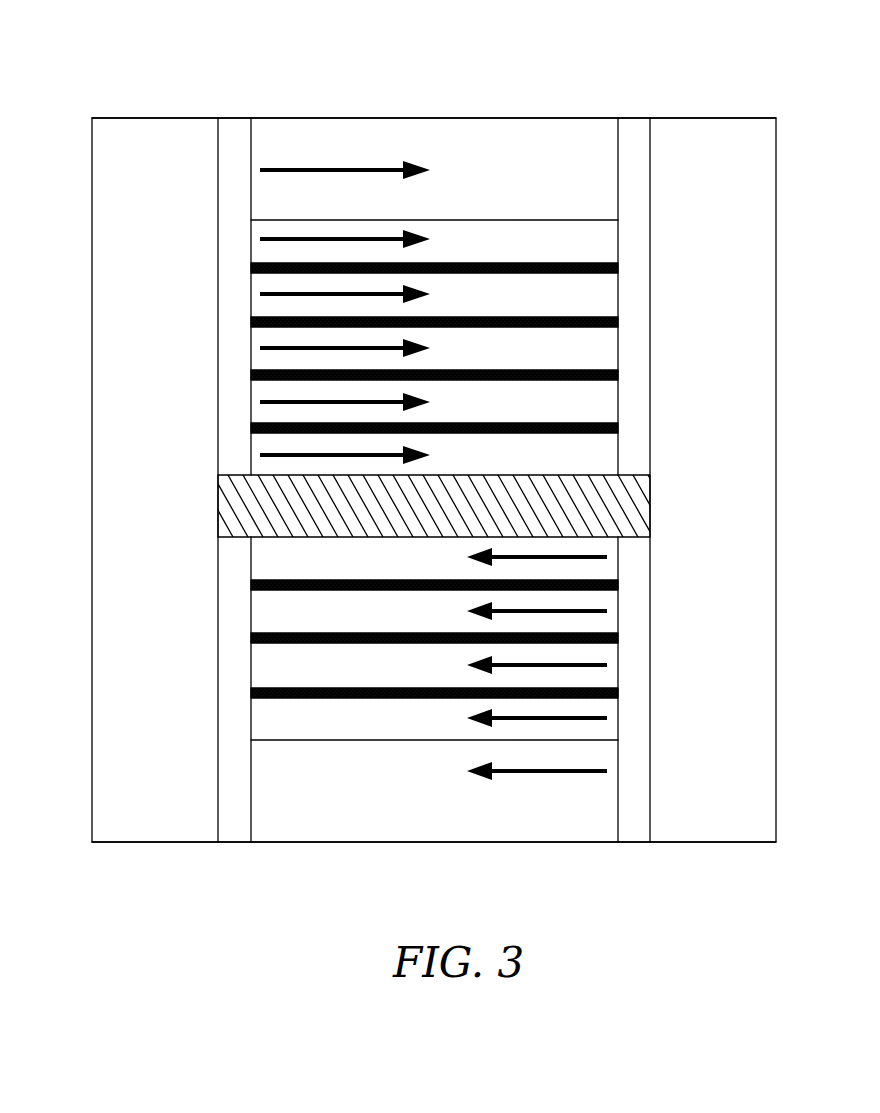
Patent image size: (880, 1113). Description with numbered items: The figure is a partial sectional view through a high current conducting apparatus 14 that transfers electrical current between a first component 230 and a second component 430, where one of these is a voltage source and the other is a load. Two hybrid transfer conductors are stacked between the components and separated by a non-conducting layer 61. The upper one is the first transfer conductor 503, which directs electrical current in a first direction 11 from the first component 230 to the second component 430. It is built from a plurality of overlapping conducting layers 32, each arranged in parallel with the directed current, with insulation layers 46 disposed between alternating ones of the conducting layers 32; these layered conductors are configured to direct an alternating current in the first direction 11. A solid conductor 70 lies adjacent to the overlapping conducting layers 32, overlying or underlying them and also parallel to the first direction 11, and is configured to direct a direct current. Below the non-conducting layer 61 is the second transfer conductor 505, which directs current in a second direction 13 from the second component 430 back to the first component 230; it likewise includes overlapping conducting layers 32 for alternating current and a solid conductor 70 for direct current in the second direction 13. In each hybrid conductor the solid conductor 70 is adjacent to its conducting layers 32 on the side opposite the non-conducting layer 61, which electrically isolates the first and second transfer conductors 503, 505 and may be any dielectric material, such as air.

The high current conducting apparatus 14 is at (121, 92).
The first transfer conductor 503 is at (417, 118).
The second transfer conductor 505 is at (432, 842).
The first component 230 is at (175, 540).
The second component 430 is at (735, 540).
The non-conducting layer 61 is at (431, 518).
The solid conductor 70 is at (458, 183).
The overlapping conducting layers 32 is at (463, 252).
The insulation layers 46 is at (535, 375).
The first direction 11 is at (348, 348).
The second direction 13 is at (588, 773).